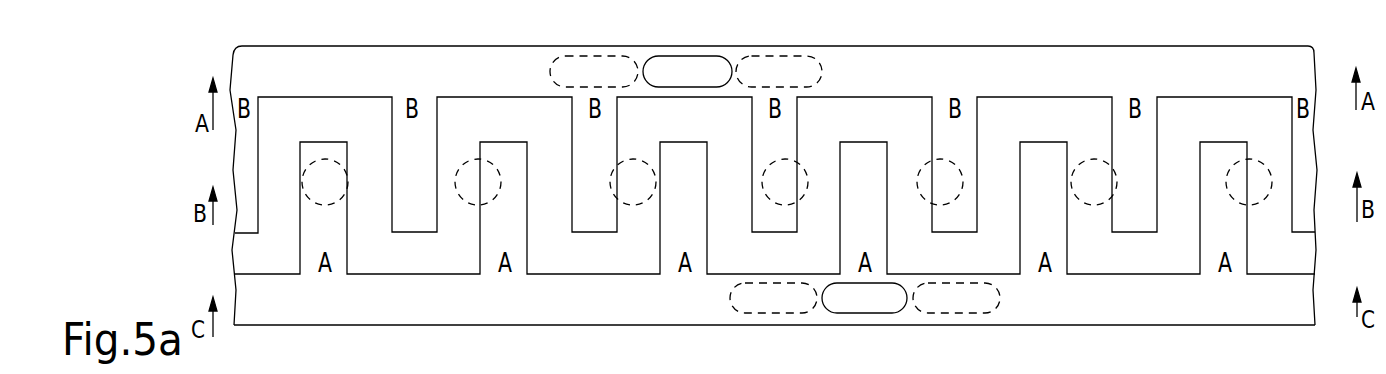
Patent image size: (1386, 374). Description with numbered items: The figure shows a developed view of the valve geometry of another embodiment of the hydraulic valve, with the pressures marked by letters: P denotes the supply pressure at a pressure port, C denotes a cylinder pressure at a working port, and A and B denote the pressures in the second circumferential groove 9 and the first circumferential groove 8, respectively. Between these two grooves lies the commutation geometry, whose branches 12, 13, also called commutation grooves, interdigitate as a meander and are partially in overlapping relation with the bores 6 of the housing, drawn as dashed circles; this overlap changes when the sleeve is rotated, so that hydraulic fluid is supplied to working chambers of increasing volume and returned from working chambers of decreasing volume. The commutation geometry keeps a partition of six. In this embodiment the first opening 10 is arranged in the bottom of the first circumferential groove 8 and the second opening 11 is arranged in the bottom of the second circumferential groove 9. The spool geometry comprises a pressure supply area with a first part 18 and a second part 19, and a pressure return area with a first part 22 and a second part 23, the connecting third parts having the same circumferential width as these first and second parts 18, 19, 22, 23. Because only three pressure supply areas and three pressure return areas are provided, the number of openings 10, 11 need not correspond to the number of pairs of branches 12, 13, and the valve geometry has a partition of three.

The bores 6 is at (1256, 160).
The first circumferential groove 8 is at (1170, 73).
The second circumferential groove 9 is at (1190, 310).
The first opening 10 is at (695, 72).
The second opening 11 is at (850, 300).
The branch 12 is at (402, 120).
The branch 13 is at (512, 168).
The first part of pressure supply area 18 is at (800, 68).
The second part of pressure supply area 19 is at (760, 300).
The first part of pressure return area 22 is at (568, 72).
The second part of pressure return area 23 is at (971, 303).